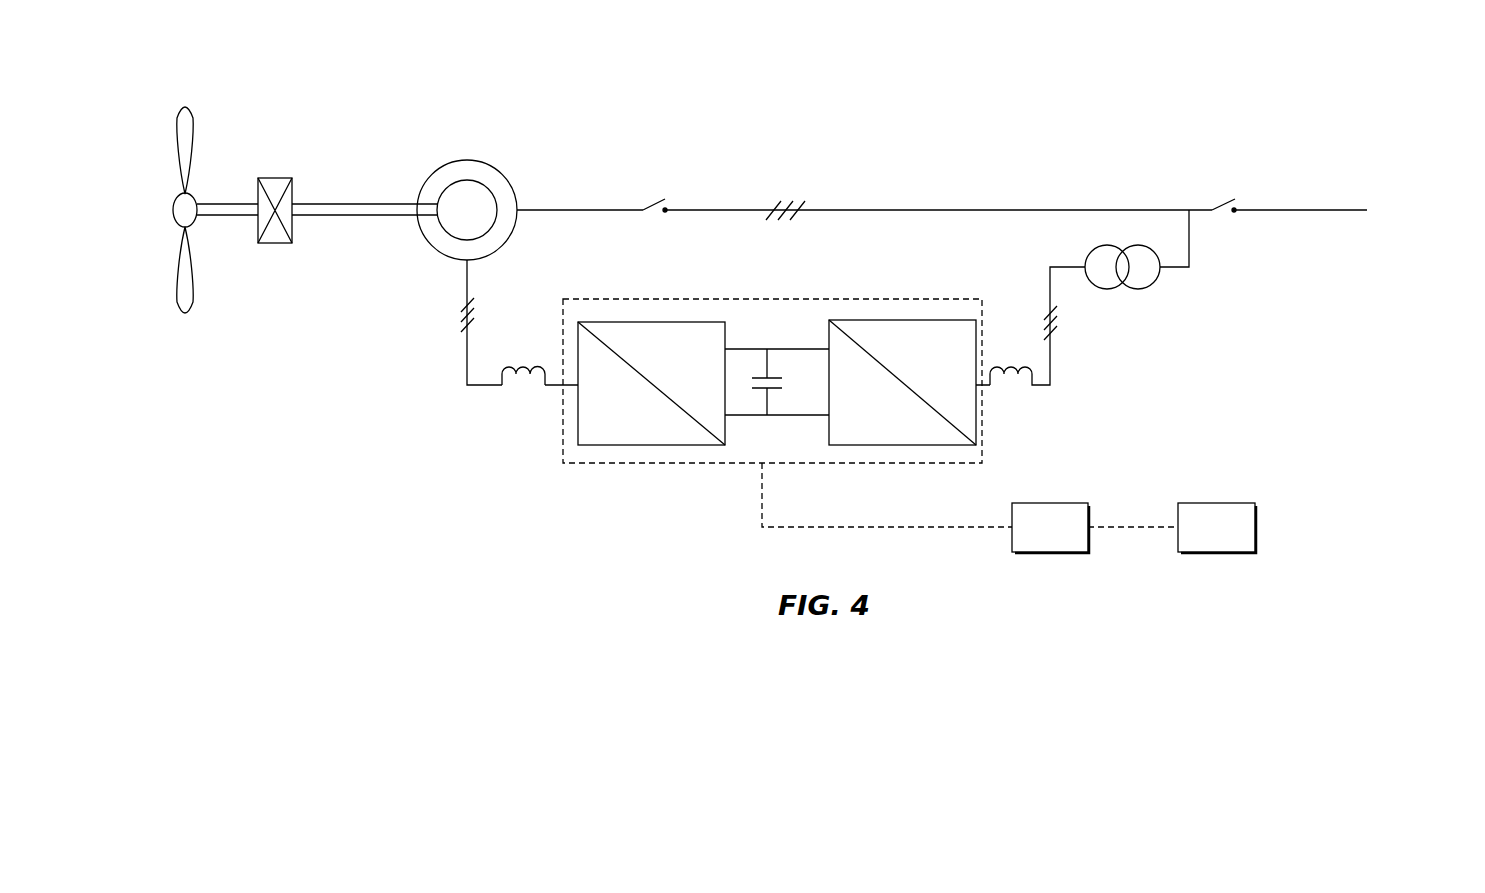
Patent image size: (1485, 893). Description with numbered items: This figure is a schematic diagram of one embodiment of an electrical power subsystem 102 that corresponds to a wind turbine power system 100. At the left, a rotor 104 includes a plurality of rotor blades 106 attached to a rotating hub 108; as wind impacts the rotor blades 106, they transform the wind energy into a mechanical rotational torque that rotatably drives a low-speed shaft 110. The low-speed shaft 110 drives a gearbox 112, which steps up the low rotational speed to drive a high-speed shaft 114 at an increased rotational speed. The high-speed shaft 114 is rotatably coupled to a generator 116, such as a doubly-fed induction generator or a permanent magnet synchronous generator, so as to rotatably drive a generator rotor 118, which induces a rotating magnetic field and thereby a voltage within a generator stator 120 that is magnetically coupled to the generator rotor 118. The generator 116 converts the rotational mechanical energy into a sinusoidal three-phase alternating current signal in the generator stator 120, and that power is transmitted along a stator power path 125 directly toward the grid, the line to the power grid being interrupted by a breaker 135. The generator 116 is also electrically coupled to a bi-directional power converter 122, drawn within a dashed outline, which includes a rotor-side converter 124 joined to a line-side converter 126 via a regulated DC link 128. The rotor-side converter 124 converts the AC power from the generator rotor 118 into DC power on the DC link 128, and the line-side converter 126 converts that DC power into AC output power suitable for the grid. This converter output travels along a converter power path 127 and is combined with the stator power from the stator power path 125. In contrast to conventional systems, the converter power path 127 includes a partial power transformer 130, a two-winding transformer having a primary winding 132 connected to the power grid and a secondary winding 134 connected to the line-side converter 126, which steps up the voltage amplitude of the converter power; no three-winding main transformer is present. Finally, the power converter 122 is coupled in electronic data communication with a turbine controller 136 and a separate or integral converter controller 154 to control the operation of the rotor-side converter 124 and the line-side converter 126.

The wind turbine power system 100 is at (203, 70).
The electrical power subsystem 102 is at (1117, 88).
The rotor 104 is at (160, 207).
The rotor blades 106 is at (187, 137).
The rotating hub 108 is at (176, 226).
The low-speed shaft 110 is at (213, 216).
The gearbox 112 is at (275, 178).
The high-speed shaft 114 is at (347, 216).
The generator 116 is at (493, 164).
The generator rotor 118 is at (445, 233).
The generator stator 120 is at (430, 177).
The bi-directional power converter 122 is at (712, 467).
The rotor-side converter 124 is at (643, 320).
The stator power path 125 is at (838, 210).
The line-side converter 126 is at (892, 320).
The converter power path 127 is at (1052, 358).
The regulated DC link 128 is at (772, 345).
The partial power transformer 130 is at (1143, 296).
The primary winding 132 is at (1155, 256).
The secondary winding 134 is at (1097, 248).
The grid breaker 135 is at (1242, 201).
The turbine controller 136 is at (1233, 541).
The converter controller 154 is at (1067, 541).